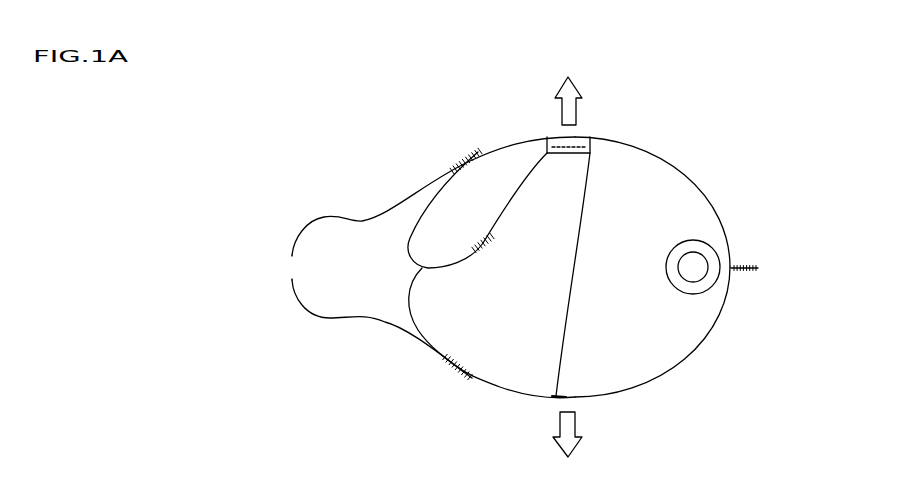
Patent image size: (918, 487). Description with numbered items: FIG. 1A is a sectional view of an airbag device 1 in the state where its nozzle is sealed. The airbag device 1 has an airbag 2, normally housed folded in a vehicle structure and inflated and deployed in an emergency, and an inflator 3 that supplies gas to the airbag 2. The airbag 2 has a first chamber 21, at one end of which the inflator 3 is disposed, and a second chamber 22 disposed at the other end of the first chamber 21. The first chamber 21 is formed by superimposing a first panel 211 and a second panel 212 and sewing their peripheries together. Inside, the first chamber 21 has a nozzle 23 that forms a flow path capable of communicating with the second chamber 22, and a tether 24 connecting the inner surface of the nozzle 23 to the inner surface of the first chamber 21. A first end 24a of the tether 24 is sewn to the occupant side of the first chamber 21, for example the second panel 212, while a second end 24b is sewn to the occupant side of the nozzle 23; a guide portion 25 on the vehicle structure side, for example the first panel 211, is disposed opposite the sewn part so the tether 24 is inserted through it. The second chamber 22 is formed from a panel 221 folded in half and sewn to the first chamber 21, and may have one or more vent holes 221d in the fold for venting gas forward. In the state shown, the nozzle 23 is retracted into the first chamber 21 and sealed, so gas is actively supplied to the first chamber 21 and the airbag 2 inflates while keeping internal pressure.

The airbag device 1 is at (716, 148).
The airbag 2 is at (405, 180).
The inflator 3 is at (695, 240).
The first chamber 21 is at (625, 150).
The second chamber 22 is at (358, 222).
The nozzle 23 is at (480, 234).
The tether 24 is at (578, 263).
The first end of the tether 24a is at (489, 246).
The second end of the tether 24b is at (578, 394).
The guide portion 25 is at (567, 155).
The first panel 211 is at (681, 165).
The second panel 212 is at (504, 391).
The panel 221 is at (353, 308).
The vent holes 221d is at (288, 266).